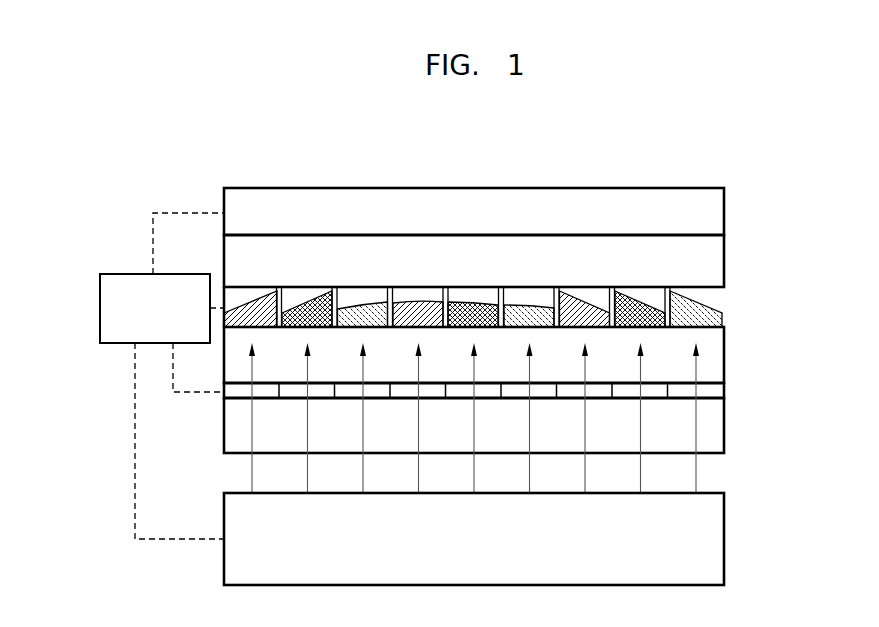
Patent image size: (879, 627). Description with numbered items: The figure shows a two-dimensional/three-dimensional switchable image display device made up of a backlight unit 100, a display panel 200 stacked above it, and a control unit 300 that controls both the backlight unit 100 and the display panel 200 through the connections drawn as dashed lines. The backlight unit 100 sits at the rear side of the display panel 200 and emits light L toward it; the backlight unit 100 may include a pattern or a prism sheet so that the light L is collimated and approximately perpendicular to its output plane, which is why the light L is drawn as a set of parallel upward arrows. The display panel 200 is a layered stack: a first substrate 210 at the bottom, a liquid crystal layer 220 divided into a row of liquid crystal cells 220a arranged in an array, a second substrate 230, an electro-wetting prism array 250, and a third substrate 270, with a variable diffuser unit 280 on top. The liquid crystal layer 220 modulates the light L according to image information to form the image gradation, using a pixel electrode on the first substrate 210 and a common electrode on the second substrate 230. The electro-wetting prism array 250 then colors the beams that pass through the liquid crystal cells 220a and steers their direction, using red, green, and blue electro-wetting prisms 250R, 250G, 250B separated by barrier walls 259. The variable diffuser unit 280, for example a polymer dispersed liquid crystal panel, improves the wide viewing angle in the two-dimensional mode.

The backlight unit 100 is at (724, 539).
The display panel 200 is at (542, 385).
The first substrate 210 is at (511, 425).
The liquid crystal layer 220 is at (518, 501).
The liquid crystal cell 220a is at (270, 397).
The second substrate 230 is at (724, 360).
The electro-wetting prism array 250 is at (518, 239).
The red electro-wetting prism 250R is at (421, 301).
The green electro-wetting prism 250G is at (473, 302).
The blue electro-wetting prism 250B is at (530, 305).
The barrier wall 259 is at (612, 288).
The third substrate 270 is at (724, 262).
The variable diffuser unit 280 is at (724, 211).
The control unit 300 is at (122, 274).
The light L is at (696, 470).